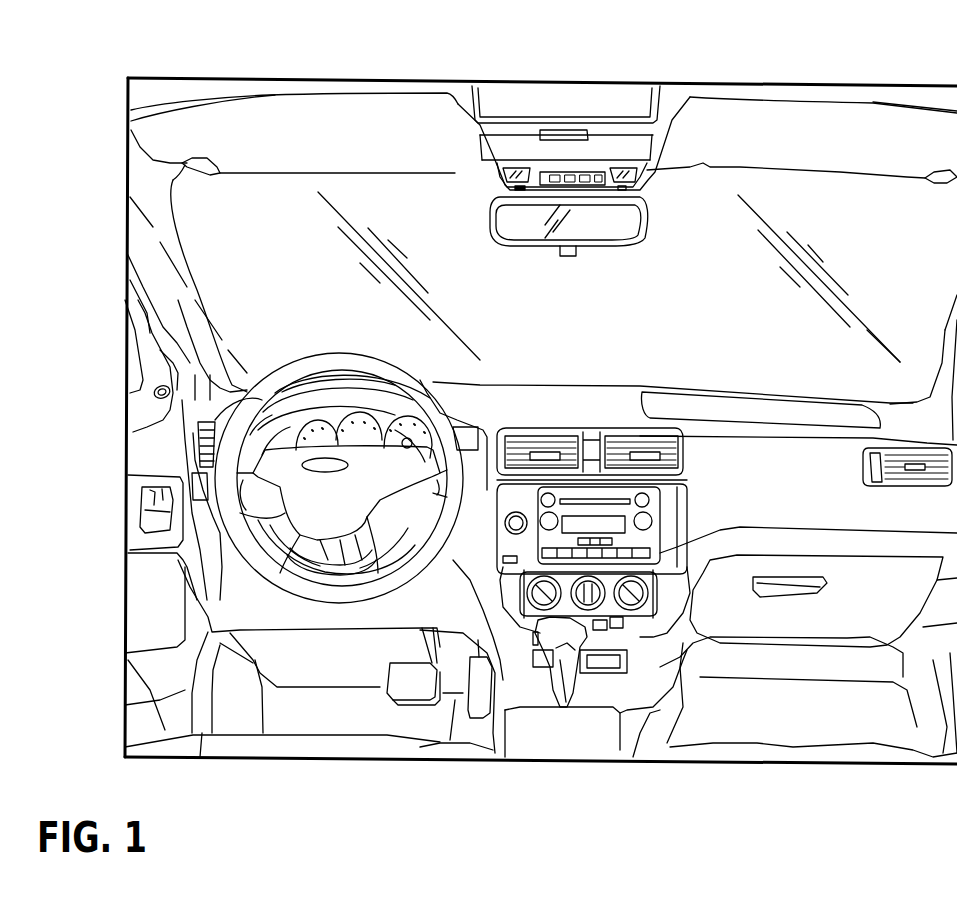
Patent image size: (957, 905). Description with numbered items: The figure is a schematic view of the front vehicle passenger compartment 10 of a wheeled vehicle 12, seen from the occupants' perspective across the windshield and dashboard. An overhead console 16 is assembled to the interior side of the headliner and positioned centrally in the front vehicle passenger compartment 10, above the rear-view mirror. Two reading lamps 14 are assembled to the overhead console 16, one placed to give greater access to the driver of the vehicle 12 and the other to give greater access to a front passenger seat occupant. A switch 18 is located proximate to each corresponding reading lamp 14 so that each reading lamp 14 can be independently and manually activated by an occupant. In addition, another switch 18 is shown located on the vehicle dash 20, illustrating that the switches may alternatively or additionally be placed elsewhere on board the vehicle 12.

The front vehicle passenger compartment 10 is at (207, 243).
The wheeled vehicle 12 is at (399, 137).
The reading lamp 14 is at (515, 172).
The overhead console 16 is at (690, 132).
The switch 18 is at (517, 190).
The vehicle dash 20 is at (490, 527).